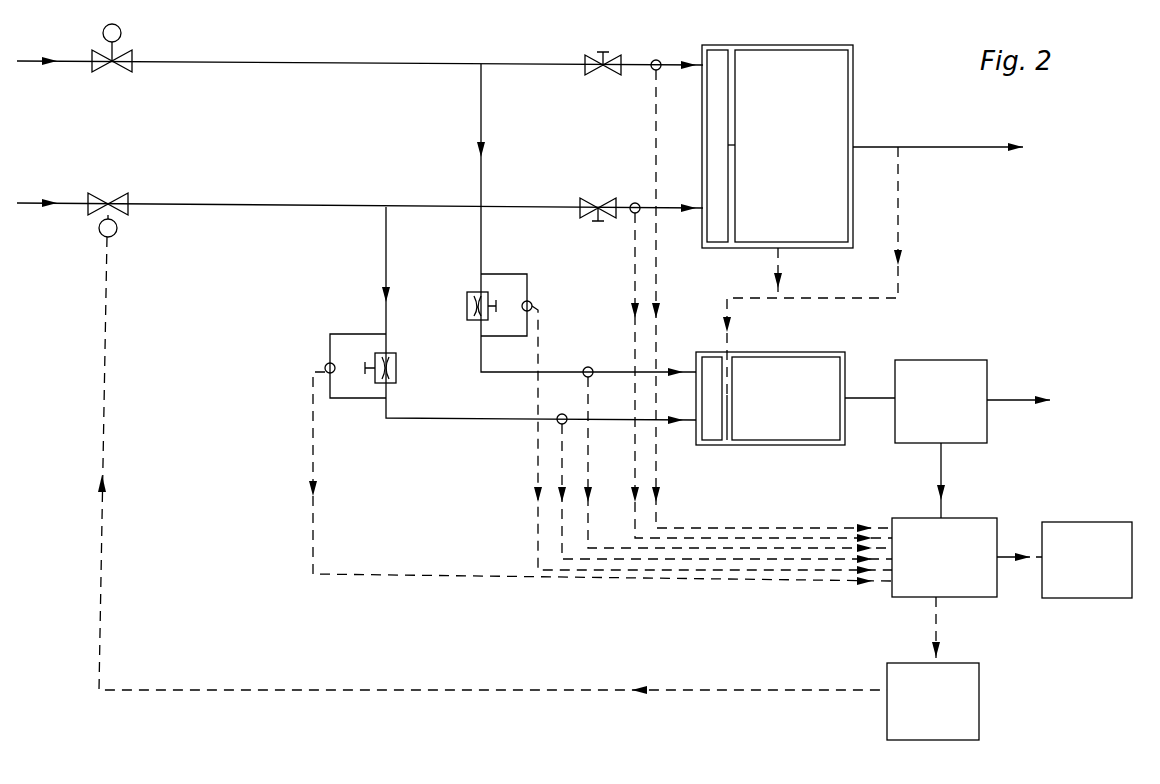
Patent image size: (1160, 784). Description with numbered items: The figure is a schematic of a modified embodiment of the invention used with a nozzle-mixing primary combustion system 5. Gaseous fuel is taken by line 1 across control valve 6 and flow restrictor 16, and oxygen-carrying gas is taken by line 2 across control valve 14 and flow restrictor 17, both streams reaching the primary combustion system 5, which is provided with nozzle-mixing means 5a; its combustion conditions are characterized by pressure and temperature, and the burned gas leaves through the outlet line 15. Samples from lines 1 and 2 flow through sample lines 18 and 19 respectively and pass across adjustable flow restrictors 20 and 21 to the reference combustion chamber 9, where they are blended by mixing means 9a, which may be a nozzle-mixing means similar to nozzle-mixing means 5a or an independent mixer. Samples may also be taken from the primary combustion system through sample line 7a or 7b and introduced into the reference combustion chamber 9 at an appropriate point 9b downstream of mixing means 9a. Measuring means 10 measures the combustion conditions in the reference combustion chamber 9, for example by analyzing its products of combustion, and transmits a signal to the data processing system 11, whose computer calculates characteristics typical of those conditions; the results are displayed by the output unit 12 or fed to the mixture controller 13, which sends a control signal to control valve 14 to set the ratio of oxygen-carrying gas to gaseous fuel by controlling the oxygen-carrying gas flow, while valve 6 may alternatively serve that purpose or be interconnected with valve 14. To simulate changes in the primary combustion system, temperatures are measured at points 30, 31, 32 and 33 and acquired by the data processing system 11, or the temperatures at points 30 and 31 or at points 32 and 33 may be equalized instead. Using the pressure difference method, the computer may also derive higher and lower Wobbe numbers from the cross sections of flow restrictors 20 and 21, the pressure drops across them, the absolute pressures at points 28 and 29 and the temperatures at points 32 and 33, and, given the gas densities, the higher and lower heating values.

The gaseous fuel line 1 is at (296, 63).
The oxygen-carrying gas line 2 is at (296, 205).
The primary combustion system 5 is at (855, 68).
The nozzle-mixing means 5a is at (712, 58).
The control valve 6 is at (135, 56).
The sample line 7a is at (778, 255).
The sample line 7b is at (898, 225).
The reference combustion chamber 9 is at (796, 352).
The mixing means 9a is at (710, 437).
The sample introduction point 9b is at (727, 398).
The measuring means 10 is at (940, 360).
The data processing system 11 is at (960, 518).
The output unit 12 is at (1087, 522).
The controller 13 is at (979, 702).
The control valve 14 is at (130, 208).
The outlet line 15 is at (941, 147).
The flow restrictor 16 is at (590, 58).
The flow restrictor 17 is at (598, 222).
The sample line 18 is at (481, 253).
The sample line 19 is at (386, 242).
The adjustable flow restrictor 20 is at (466, 306).
The adjustable flow restrictor 21 is at (398, 370).
The pressure measuring point 28 is at (536, 304).
The pressure measuring point 29 is at (325, 368).
The temperature measuring point 30 is at (655, 73).
The temperature measuring point 31 is at (633, 204).
The temperature measuring point 32 is at (591, 367).
The temperature measuring point 33 is at (557, 427).